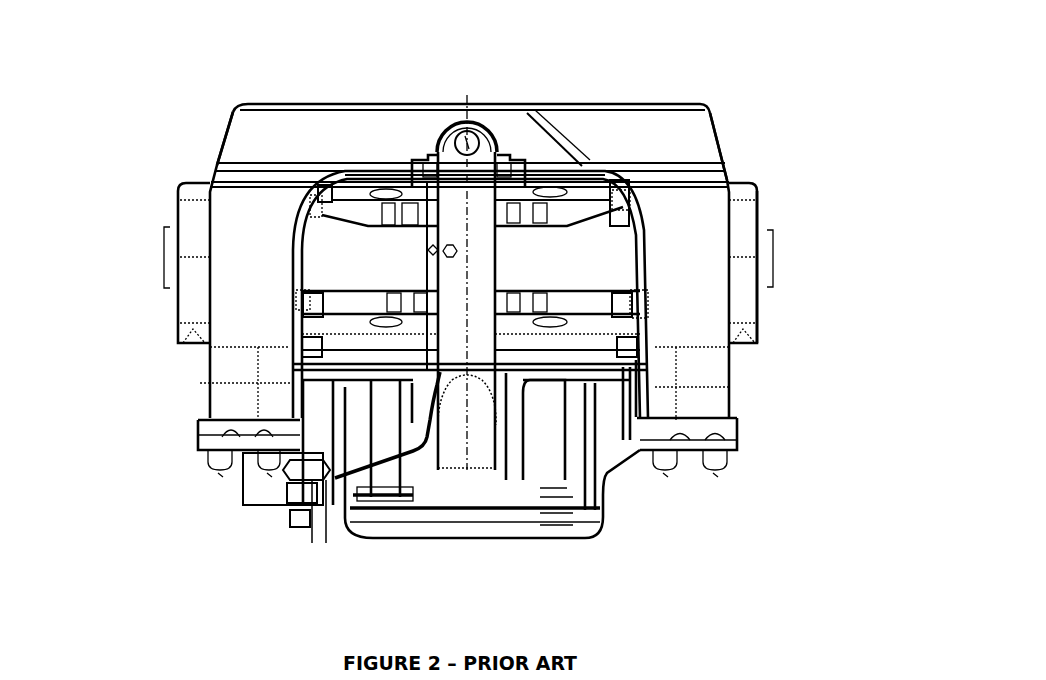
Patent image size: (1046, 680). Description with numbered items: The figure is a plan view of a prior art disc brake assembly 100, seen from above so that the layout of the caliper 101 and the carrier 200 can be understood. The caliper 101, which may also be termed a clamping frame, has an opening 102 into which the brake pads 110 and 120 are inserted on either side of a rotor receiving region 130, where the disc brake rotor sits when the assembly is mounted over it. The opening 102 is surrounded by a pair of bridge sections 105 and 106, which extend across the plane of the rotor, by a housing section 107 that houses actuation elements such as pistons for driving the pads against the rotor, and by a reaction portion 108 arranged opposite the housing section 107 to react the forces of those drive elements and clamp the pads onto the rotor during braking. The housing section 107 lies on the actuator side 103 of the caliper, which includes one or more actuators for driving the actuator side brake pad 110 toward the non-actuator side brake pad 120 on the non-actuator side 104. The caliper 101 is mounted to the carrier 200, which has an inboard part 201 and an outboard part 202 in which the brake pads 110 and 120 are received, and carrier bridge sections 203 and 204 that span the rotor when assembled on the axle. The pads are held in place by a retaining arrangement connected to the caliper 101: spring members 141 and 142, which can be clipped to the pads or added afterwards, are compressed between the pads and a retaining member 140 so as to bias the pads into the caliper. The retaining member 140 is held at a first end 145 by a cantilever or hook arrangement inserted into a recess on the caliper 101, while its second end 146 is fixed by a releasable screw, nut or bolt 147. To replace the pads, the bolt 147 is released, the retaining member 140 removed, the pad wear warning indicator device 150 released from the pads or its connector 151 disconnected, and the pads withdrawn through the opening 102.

The disc brake assembly 100 is at (243, 100).
The caliper 101 is at (233, 137).
The opening 102 is at (286, 238).
The actuator side 103 is at (622, 488).
The non-actuator side 104 is at (678, 145).
The bridge section 105 is at (705, 269).
The bridge section 106 is at (262, 323).
The housing section 107 is at (403, 421).
The reaction portion 108 is at (338, 149).
The brake pad 110 is at (372, 305).
The brake pad 120 is at (588, 207).
The rotor receiving region 130 is at (535, 263).
The retaining member 140 is at (480, 200).
The spring member 141 is at (590, 195).
The spring member 142 is at (580, 327).
The first end 145 is at (482, 363).
The second end 146 is at (462, 133).
The screw, nut or bolt 147 is at (462, 128).
The pad wear warning indicator device 150 is at (436, 238).
The pad wear warning indicator connector 151 is at (303, 483).
The carrier 200 is at (757, 175).
The inboard part 201 is at (188, 317).
The outboard part 202 is at (197, 195).
The carrier bridge section 203 is at (164, 257).
The carrier bridge section 204 is at (773, 258).